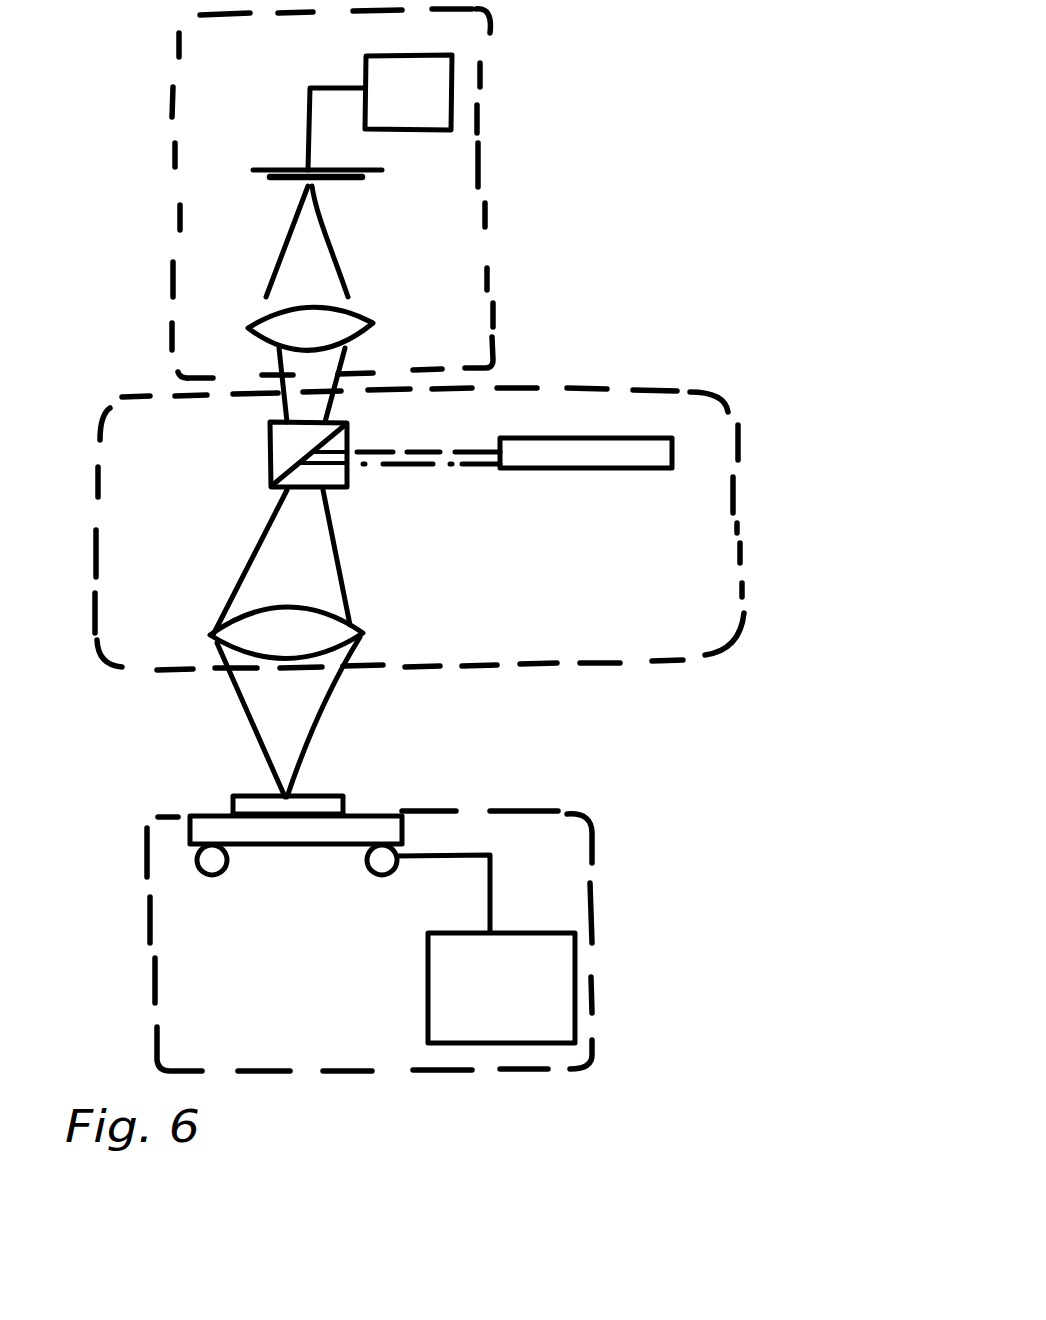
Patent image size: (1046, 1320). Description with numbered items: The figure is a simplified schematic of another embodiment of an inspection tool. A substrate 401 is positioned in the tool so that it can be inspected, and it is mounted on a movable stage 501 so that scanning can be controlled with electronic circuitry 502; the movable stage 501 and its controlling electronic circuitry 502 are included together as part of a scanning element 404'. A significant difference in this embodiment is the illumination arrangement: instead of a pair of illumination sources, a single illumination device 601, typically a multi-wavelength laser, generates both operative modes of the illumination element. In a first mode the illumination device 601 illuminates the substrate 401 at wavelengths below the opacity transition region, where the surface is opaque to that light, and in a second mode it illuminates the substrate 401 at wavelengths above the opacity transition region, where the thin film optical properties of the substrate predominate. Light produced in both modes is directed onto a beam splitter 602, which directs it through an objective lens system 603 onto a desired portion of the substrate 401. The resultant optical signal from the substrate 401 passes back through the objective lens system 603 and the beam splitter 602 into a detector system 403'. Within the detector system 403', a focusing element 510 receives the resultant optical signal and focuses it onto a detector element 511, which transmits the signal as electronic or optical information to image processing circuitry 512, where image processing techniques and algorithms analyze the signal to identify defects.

The detector system 403' is at (406, 193).
The image processing circuitry 512 is at (415, 113).
The detector element 511 is at (382, 170).
The focusing element 510 is at (373, 323).
The beam splitter 602 is at (270, 440).
The illumination device 601 is at (597, 468).
The objective lens system 603 is at (213, 635).
The substrate 401 is at (234, 812).
The scanning element 404' is at (458, 941).
The movable stage 501 is at (402, 825).
The electronic circuitry 502 is at (495, 1007).